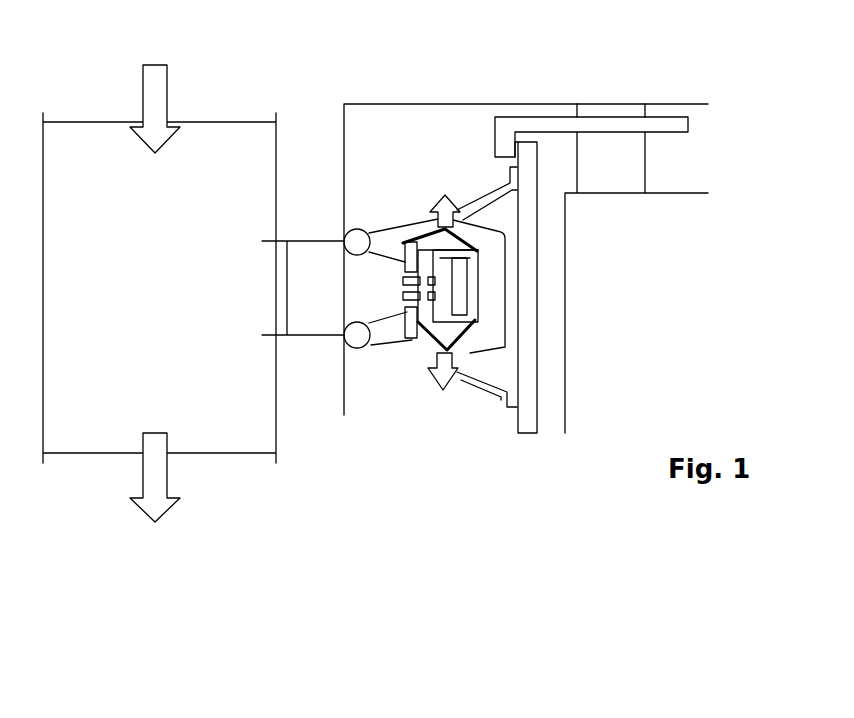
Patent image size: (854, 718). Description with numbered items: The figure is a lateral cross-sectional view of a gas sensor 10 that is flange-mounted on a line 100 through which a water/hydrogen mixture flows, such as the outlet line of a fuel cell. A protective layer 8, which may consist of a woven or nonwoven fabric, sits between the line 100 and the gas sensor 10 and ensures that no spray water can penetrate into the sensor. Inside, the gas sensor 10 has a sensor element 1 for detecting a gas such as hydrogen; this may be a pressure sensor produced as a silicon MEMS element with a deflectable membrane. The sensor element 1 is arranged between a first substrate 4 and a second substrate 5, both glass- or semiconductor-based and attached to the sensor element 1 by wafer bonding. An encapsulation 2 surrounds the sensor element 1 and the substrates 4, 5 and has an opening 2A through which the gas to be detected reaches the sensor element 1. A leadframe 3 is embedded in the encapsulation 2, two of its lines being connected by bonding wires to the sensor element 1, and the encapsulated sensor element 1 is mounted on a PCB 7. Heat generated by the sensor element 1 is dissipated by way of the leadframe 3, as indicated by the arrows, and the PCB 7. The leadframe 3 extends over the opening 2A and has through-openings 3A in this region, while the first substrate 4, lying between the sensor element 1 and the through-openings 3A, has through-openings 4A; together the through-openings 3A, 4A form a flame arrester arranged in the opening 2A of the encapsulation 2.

The line 100 is at (268, 150).
The gas sensor 10 is at (667, 51).
The PCB 7 is at (528, 145).
The protective layer 8 is at (281, 324).
The sensor element 1 is at (477, 252).
The second substrate 5 is at (470, 277).
The encapsulation 2 is at (495, 328).
The opening 2A is at (392, 292).
The through-openings 3A is at (391, 216).
The leadframe 3 is at (357, 242).
The first substrate 4 is at (452, 342).
The through-openings 4A is at (422, 303).